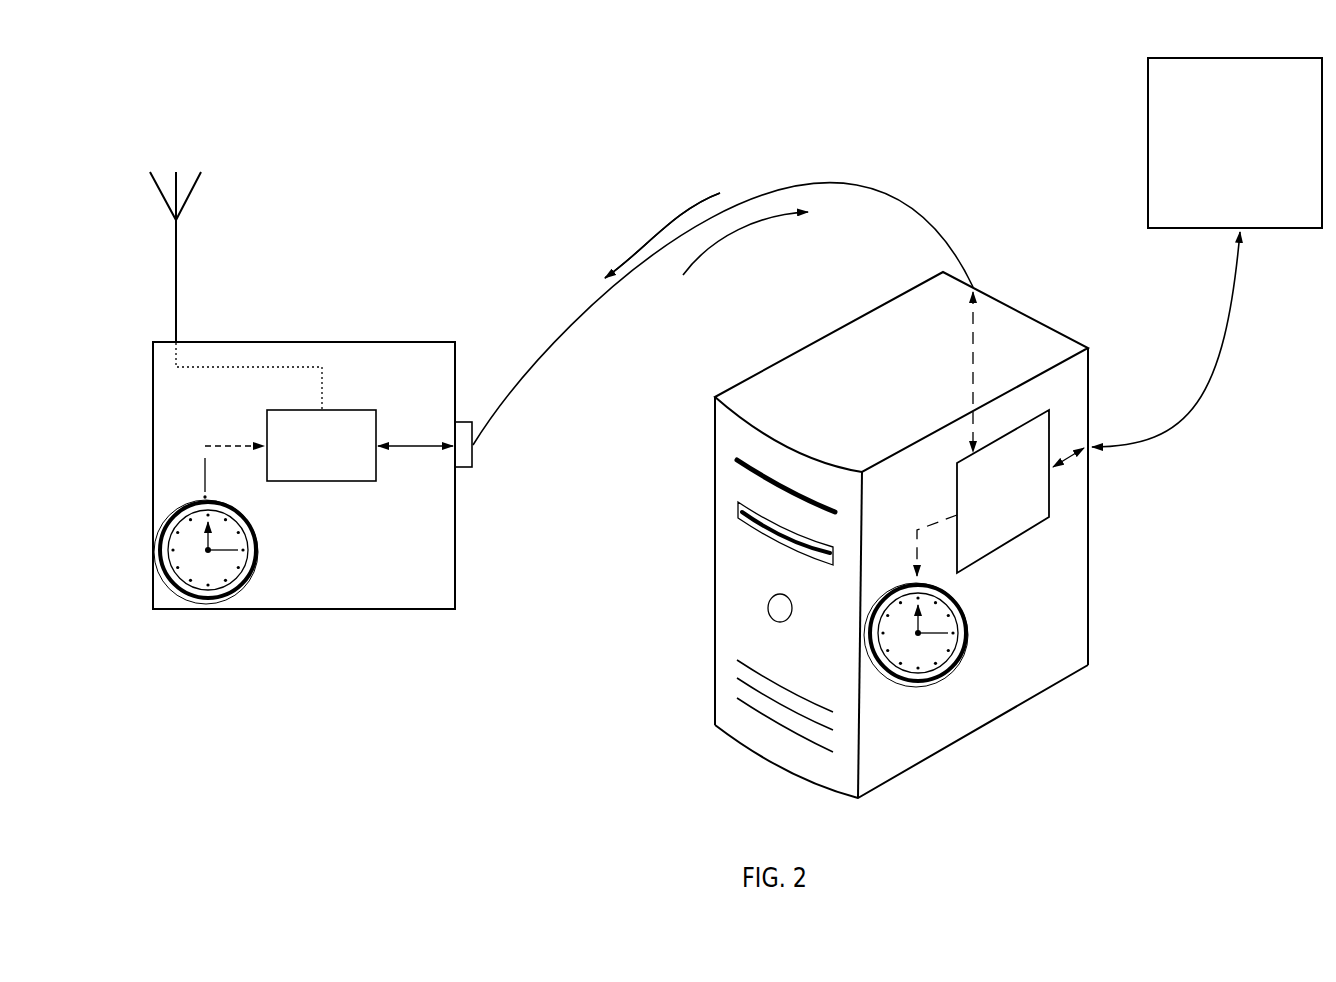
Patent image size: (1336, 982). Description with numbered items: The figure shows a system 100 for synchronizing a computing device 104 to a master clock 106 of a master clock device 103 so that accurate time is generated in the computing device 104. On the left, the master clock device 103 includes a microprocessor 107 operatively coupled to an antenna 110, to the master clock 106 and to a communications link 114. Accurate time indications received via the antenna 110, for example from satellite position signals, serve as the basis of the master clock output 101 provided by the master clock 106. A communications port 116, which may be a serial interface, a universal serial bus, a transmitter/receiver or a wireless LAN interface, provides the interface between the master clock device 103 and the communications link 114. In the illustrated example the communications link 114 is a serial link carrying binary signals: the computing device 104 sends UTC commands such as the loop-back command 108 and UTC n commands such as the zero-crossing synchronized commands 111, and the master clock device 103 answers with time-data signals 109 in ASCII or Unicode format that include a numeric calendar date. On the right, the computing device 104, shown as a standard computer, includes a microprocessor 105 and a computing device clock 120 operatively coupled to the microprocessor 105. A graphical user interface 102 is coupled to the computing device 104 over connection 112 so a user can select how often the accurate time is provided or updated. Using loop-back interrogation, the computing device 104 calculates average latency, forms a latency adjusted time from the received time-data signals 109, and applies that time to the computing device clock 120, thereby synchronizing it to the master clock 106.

The system 100 is at (574, 118).
The master clock output 101 is at (233, 446).
The graphical user interface 102 is at (1235, 143).
The master clock device 103 is at (455, 568).
The computing device 104 is at (1088, 585).
The microprocessor 105 is at (1000, 434).
The master clock 106 is at (258, 552).
The microprocessor 107 is at (314, 412).
The loop-back command 108 is at (692, 204).
The time-data signal 109 is at (730, 237).
The antenna 110 is at (176, 265).
The zero-crossing synchronized command 111 is at (662, 225).
The host to GUI connection 112 is at (1223, 350).
The communications link 114 is at (813, 183).
The communications port 116 is at (473, 468).
The computing device clock 120 is at (1031, 639).